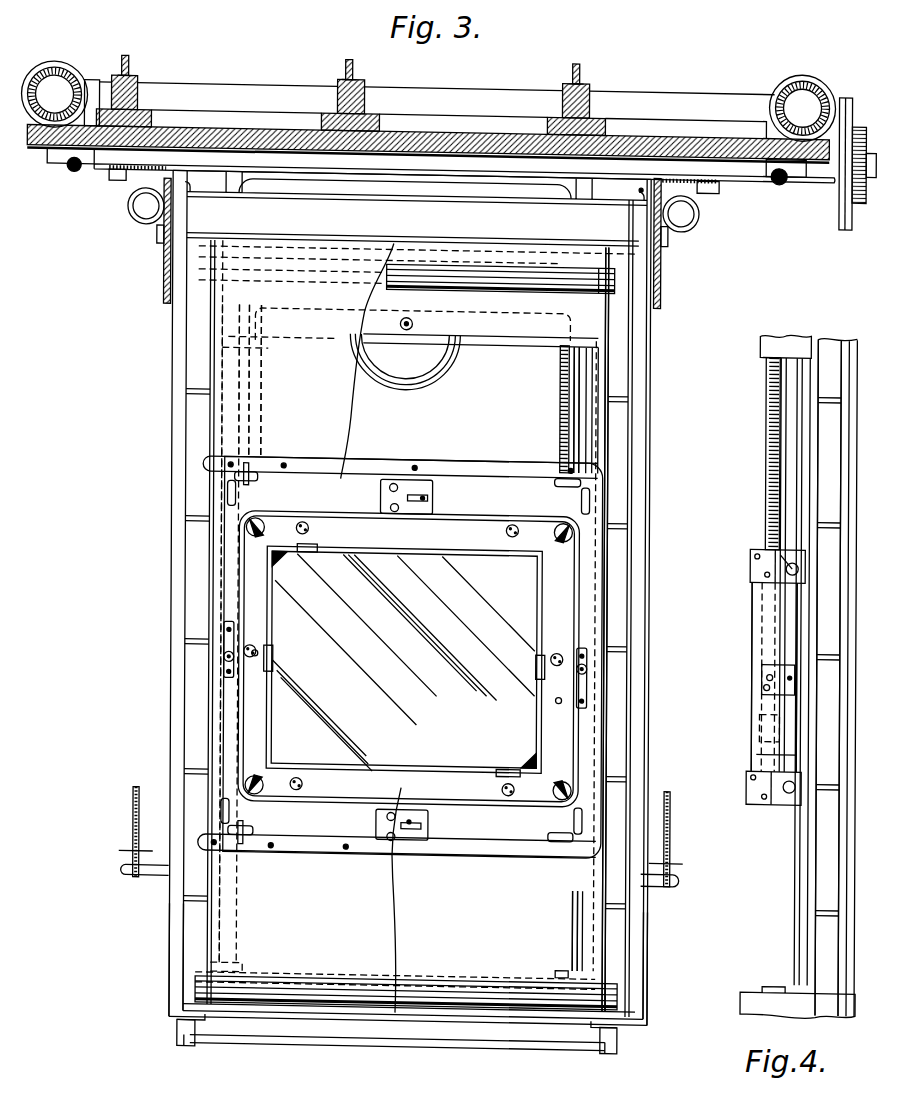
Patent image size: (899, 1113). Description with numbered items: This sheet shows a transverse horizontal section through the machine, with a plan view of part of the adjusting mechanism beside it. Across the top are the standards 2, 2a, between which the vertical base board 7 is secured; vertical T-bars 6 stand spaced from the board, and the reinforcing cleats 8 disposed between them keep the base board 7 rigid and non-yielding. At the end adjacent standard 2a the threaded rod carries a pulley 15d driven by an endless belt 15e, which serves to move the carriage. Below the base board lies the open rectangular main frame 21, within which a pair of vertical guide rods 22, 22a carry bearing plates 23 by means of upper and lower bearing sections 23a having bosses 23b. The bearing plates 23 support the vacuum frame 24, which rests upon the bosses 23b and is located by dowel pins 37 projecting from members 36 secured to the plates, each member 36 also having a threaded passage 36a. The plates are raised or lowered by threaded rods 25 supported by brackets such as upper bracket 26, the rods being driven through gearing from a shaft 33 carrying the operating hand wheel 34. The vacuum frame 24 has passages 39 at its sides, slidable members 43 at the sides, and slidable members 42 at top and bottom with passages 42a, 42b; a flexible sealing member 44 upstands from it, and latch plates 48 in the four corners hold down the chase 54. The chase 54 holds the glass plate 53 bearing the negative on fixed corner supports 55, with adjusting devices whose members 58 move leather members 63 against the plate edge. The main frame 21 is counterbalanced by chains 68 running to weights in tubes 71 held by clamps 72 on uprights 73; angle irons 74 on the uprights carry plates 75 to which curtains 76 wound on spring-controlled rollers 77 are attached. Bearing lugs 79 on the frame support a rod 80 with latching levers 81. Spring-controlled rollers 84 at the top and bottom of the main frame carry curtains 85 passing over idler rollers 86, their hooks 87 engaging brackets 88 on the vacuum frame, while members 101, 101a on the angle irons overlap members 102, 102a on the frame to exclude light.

In FIG. 3, the standard 2 is at (60, 73).
In FIG. 3, the standard 2a is at (804, 90).
In FIG. 3, the T-bar 6 is at (367, 59).
In FIG. 3, the base board 7 is at (428, 111).
In FIG. 3, the reinforcing cleat 8 is at (350, 98).
In FIG. 3, the pulley 15d is at (857, 201).
In FIG. 3, the endless belt 15e is at (863, 146).
In FIG. 3, the main frame 21 is at (643, 630).
In FIG. 4, the main frame 21 is at (793, 678).
In FIG. 3, the vertical guide rod 22 is at (278, 381).
In FIG. 3, the vertical guide rod 22a is at (550, 659).
In FIG. 4, the bearing plate 23 is at (752, 677).
In FIG. 4, the bearing section 23a is at (755, 670).
In FIG. 4, the boss 23b is at (758, 668).
In FIG. 3, the vacuum frame 24 is at (413, 645).
In FIG. 3, the threaded rod 25 is at (409, 389).
In FIG. 4, the threaded rod 25 is at (753, 454).
In FIG. 4, the upper bracket 26 is at (752, 744).
In FIG. 3, the shaft 33 is at (388, 321).
In FIG. 3, the operating hand wheel 34 is at (417, 366).
In FIG. 4, the member 36 is at (751, 681).
In FIG. 4, the threaded passage 36a is at (742, 721).
In FIG. 4, the dowel pin 37 is at (740, 672).
In FIG. 3, the passage 39 is at (356, 670).
In FIG. 3, the member 42 is at (414, 635).
In FIG. 3, the passage 42a is at (413, 661).
In FIG. 3, the passage 42b is at (390, 460).
In FIG. 3, the member 43 is at (406, 659).
In FIG. 3, the sealing member 44 is at (408, 645).
In FIG. 3, the latch plate 48 is at (405, 679).
In FIG. 3, the glass plate 53 is at (403, 663).
In FIG. 3, the chase 54 is at (404, 659).
In FIG. 3, the fixed support 55 is at (404, 659).
In FIG. 3, the member 58 is at (403, 663).
In FIG. 3, the member 63 is at (404, 660).
In FIG. 3, the chain 68 is at (402, 834).
In FIG. 3, the tube 71 is at (427, 216).
In FIG. 3, the clamp 72 is at (415, 242).
In FIG. 3, the vertical upright 73 is at (417, 240).
In FIG. 3, the vertical angle iron 74 is at (426, 189).
In FIG. 3, the plate 75 is at (427, 187).
In FIG. 3, the curtain 76 is at (420, 198).
In FIG. 3, the spring-controlled roller 77 is at (423, 190).
In FIG. 3, the bearing lug 79 is at (398, 1039).
In FIG. 3, the rod 80 is at (397, 1063).
In FIG. 3, the latching lever 81 is at (395, 1067).
In FIG. 3, the spring-controlled roller 84 is at (408, 610).
In FIG. 3, the curtain 85 is at (285, 634).
In FIG. 3, the idler roller 86 is at (408, 609).
In FIG. 3, the hook 87 is at (271, 673).
In FIG. 3, the bracket 88 is at (398, 667).
In FIG. 3, the member 101 is at (209, 196).
In FIG. 3, the member 101a is at (619, 204).
In FIG. 3, the member 102 is at (143, 959).
In FIG. 3, the member 102a is at (672, 968).